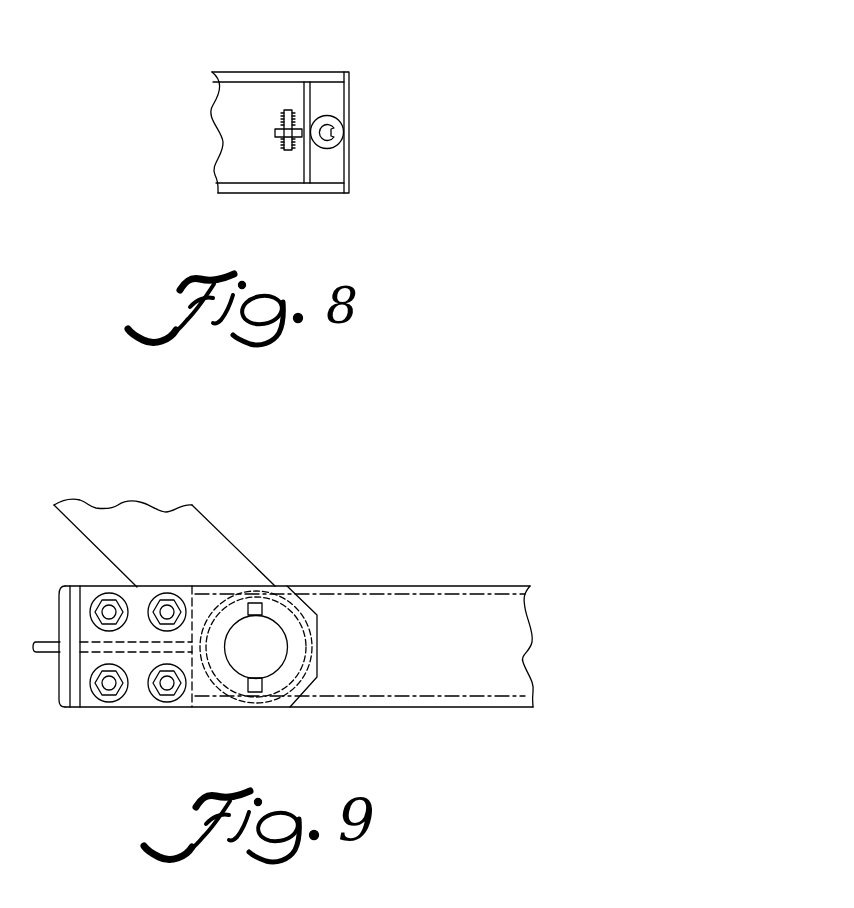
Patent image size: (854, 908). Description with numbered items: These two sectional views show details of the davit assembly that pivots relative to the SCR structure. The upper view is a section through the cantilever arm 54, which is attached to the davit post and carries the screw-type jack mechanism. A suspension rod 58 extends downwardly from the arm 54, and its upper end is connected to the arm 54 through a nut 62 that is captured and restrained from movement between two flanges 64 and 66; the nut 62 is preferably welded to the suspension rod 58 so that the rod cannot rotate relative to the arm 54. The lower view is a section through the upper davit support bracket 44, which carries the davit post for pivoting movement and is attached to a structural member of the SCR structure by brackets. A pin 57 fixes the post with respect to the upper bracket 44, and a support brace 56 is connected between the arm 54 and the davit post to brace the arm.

In FIG. 9, the upper davit support bracket 44 is at (212, 697).
In FIG. 8, the cantilever arm 54 is at (268, 195).
In FIG. 9, the support brace 56 is at (427, 586).
In FIG. 9, the pin 57 is at (262, 610).
In FIG. 8, the suspension rod 58 is at (333, 136).
In FIG. 8, the nut 62 is at (342, 115).
In FIG. 8, the flange 64 is at (305, 92).
In FIG. 8, the flange 66 is at (350, 90).